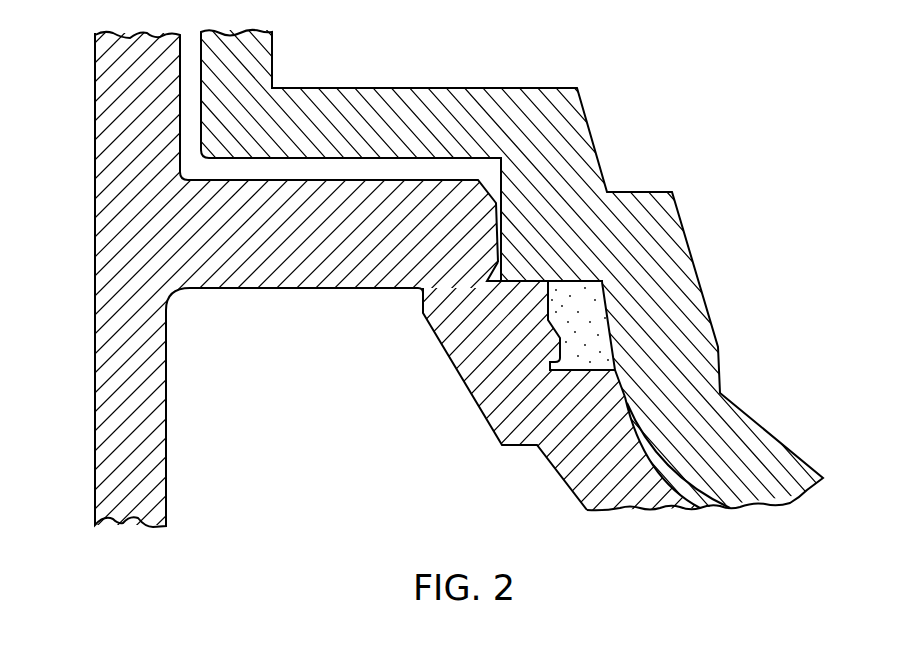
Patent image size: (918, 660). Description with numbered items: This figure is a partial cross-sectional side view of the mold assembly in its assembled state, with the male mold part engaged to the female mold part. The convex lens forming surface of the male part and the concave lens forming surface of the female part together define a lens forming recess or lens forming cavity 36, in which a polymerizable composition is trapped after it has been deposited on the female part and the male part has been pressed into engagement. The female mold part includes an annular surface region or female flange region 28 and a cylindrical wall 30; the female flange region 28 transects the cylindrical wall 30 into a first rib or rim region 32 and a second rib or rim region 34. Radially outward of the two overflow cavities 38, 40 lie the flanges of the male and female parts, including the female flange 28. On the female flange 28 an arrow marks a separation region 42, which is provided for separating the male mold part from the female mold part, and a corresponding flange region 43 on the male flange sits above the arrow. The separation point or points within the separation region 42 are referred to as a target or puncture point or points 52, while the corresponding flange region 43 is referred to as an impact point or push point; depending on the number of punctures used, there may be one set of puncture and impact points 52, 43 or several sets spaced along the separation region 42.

The annular surface region or female flange region 28 is at (207, 180).
The cylindrical wall 30 is at (95, 272).
The first rib or rim region 32 is at (95, 468).
The second rib or rim region 34 is at (95, 135).
The lens forming recess or lens forming cavity 36 is at (698, 508).
The overflow cavity 38 is at (590, 307).
The overflow cavity 40 is at (495, 276).
The separation region 42 is at (333, 290).
The flange region (impact point or push point) 43 is at (388, 162).
The target or puncture point 52 is at (263, 288).